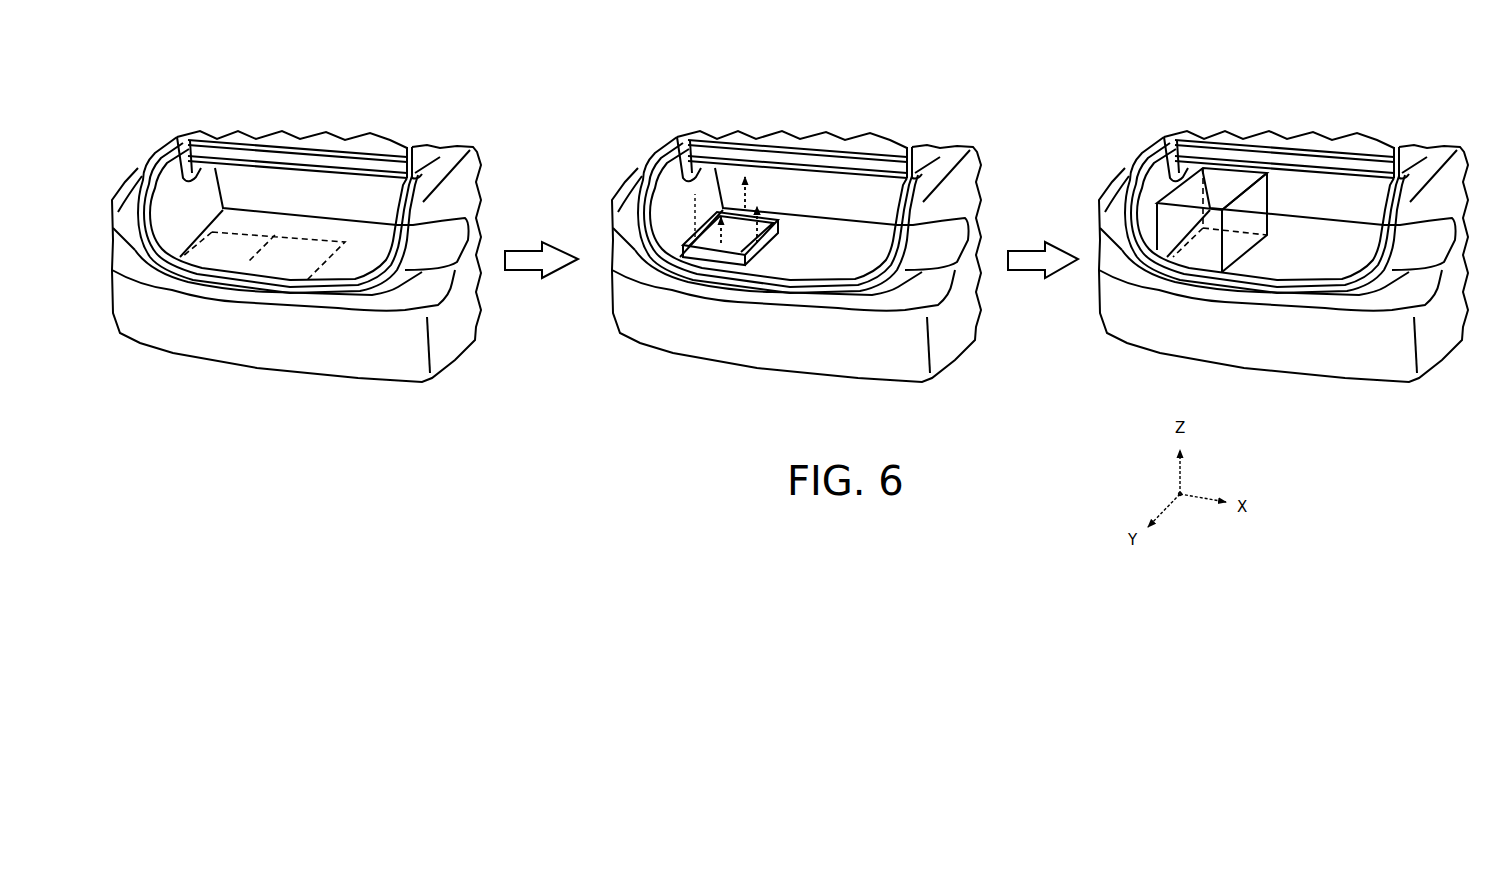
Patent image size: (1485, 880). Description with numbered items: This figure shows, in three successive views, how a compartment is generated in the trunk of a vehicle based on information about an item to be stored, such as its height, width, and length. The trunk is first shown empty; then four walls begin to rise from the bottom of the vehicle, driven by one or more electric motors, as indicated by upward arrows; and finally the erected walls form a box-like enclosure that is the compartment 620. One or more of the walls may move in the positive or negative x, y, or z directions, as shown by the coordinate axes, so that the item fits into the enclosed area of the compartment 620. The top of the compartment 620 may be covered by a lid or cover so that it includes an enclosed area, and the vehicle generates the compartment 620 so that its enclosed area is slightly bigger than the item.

The compartment 620 is at (1273, 185).